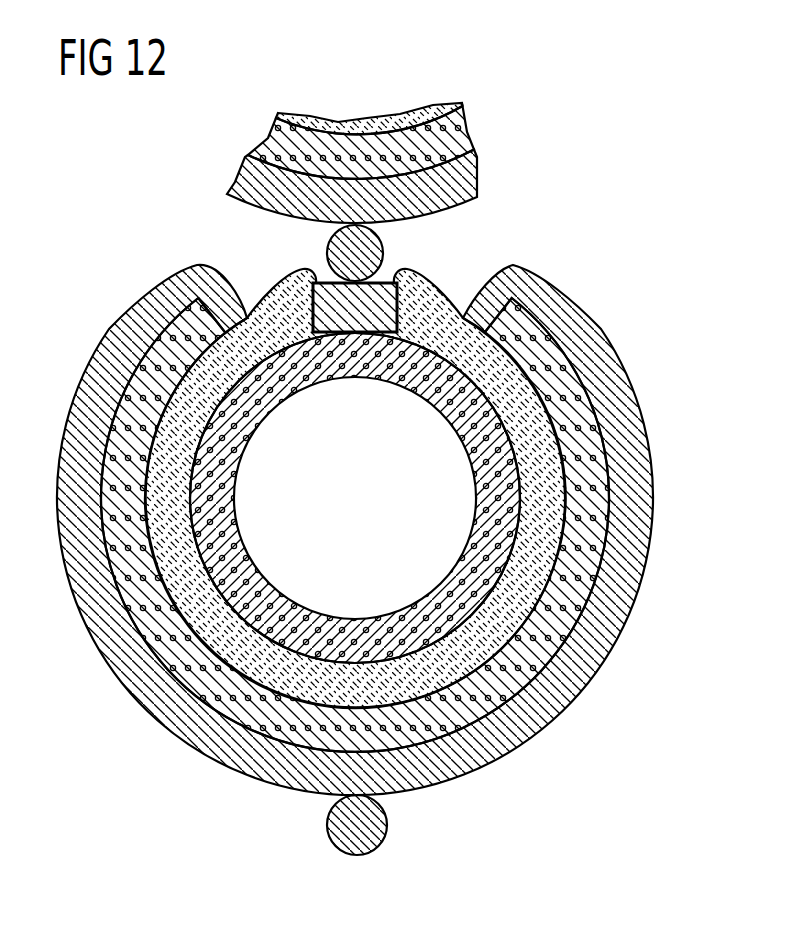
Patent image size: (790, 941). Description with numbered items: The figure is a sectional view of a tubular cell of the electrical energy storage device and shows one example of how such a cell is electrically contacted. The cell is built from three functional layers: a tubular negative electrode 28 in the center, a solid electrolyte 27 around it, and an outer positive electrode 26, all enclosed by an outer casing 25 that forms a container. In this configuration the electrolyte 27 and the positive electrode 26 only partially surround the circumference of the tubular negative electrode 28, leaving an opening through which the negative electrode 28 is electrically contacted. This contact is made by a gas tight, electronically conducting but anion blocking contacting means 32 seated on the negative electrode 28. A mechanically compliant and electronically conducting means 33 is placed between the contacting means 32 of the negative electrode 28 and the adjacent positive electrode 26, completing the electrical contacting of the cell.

The outer casing 25 is at (640, 462).
The positive electrode 26 is at (557, 362).
The solid electrolyte 27 is at (283, 308).
The negative electrode 28 is at (482, 453).
The contacting means 32 is at (352, 318).
The mechanically compliant and electronically conducting means 33 is at (372, 252).